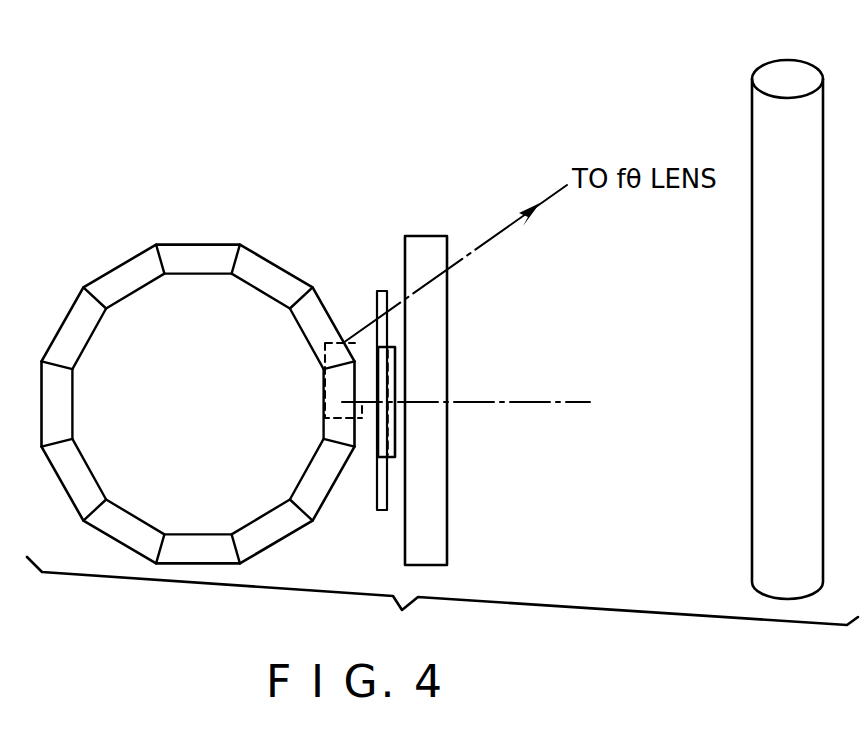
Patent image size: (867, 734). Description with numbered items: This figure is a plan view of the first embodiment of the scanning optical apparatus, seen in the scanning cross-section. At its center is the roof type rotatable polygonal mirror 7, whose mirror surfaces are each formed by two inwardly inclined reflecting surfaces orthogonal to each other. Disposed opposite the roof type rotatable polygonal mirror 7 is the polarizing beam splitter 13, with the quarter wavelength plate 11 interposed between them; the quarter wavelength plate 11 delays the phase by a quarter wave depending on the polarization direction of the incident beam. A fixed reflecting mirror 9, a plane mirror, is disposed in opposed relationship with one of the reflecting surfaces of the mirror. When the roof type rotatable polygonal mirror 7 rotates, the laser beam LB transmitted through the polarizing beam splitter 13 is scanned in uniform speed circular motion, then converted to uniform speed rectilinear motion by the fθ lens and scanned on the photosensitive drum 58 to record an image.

The roof type rotatable polygonal mirror 7 is at (262, 315).
The fixed reflecting mirror 9 is at (393, 345).
The quarter wavelength plate 11 is at (383, 513).
The polarizing beam splitter 13 is at (449, 540).
The photosensitive drum 58 is at (770, 72).
The laser beam LB is at (523, 217).